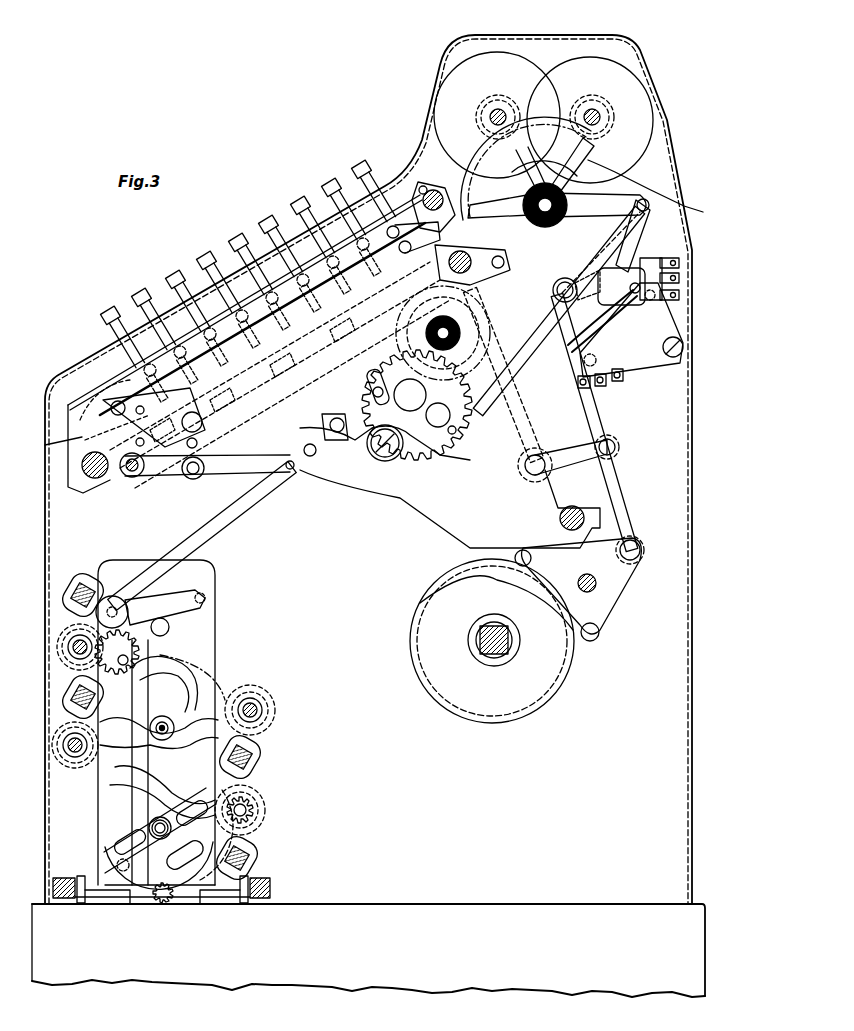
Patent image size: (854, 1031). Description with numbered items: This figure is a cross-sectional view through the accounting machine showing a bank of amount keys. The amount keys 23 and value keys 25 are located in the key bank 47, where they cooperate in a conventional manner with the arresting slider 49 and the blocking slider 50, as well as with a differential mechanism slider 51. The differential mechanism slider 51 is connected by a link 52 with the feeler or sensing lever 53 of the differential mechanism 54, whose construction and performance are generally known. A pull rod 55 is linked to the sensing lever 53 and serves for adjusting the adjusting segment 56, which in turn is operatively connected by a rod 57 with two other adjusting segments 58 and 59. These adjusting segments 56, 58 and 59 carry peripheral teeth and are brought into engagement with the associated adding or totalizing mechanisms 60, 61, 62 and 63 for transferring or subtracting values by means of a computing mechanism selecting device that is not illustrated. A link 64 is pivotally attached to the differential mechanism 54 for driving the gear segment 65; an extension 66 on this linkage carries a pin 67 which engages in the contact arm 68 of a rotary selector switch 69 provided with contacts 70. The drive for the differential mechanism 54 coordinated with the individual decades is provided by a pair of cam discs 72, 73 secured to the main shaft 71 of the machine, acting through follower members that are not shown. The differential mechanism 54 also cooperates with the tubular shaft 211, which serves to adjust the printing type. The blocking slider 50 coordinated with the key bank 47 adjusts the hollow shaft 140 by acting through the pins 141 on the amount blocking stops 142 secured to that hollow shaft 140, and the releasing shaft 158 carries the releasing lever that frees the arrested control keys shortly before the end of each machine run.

The releasing shaft 158 is at (395, 183).
The hollow shaft 140 is at (412, 196).
The pins 141 is at (436, 226).
The amount blocking stops 142 is at (496, 240).
The amount keys 23 is at (140, 277).
The value keys 25 is at (375, 191).
The arresting slider 49 is at (120, 350).
The blocking slider 50 is at (90, 372).
The key bank 47 is at (82, 437).
The differential mechanism slider 51 is at (360, 345).
The tubular shaft 211 is at (458, 336).
The link 64 is at (514, 380).
The gear segment 65 is at (656, 190).
The extension 66 is at (626, 266).
The pin 67 is at (680, 274).
The contact arm 68 is at (600, 262).
The rotary selector switch 69 is at (648, 352).
The contacts 70 is at (605, 386).
The sensing lever 53 is at (300, 422).
The differential mechanism 54 is at (415, 430).
The link 52 is at (222, 478).
The pull rod 55 is at (242, 515).
The adding mechanism 60 is at (58, 641).
The adjusting segment 56 is at (100, 666).
The adding mechanism 61 is at (55, 748).
The adjusting segment 58 is at (100, 768).
The rod 57 is at (110, 818).
The adjusting segment 59 is at (108, 848).
The adding mechanism 62 is at (270, 712).
The adding mechanism 63 is at (262, 811).
The cam disc 72 is at (450, 680).
The cam disc 73 is at (478, 665).
The main shaft 71 is at (500, 655).